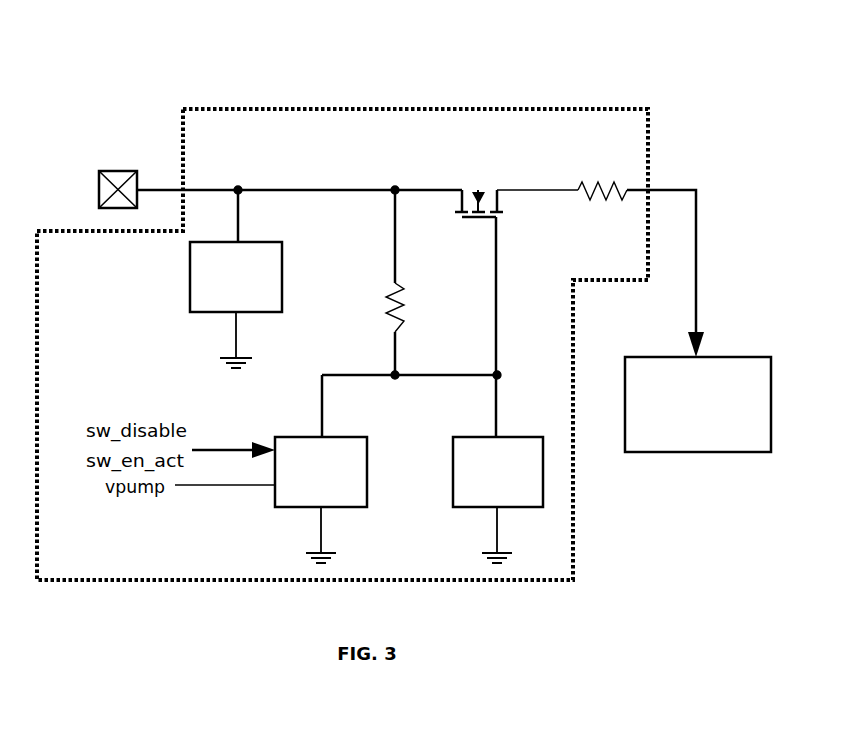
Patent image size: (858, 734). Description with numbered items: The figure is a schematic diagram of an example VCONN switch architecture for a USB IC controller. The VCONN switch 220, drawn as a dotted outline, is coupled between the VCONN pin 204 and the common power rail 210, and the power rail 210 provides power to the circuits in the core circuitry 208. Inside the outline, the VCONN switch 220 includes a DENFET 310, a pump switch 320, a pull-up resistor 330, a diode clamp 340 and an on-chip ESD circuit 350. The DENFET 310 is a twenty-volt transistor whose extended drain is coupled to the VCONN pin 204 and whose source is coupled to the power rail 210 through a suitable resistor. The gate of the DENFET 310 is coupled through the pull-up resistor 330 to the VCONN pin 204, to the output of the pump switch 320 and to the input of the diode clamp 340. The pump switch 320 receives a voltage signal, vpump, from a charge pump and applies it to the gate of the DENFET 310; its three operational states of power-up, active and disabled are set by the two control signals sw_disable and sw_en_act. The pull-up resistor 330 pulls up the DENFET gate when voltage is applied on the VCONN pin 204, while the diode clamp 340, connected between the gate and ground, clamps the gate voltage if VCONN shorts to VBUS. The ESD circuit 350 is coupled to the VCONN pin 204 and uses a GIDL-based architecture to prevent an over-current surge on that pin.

The VCONN pin 204 is at (107, 167).
The VCONN switch 220 is at (287, 70).
The DENFET 310 is at (475, 177).
The pull-up resistor 330 is at (380, 323).
The common power rail 210 is at (696, 247).
The core circuitry 208 is at (771, 408).
The on-chip ESD circuit 350 is at (190, 277).
The pump switch 320 is at (275, 500).
The diode clamp 340 is at (453, 502).